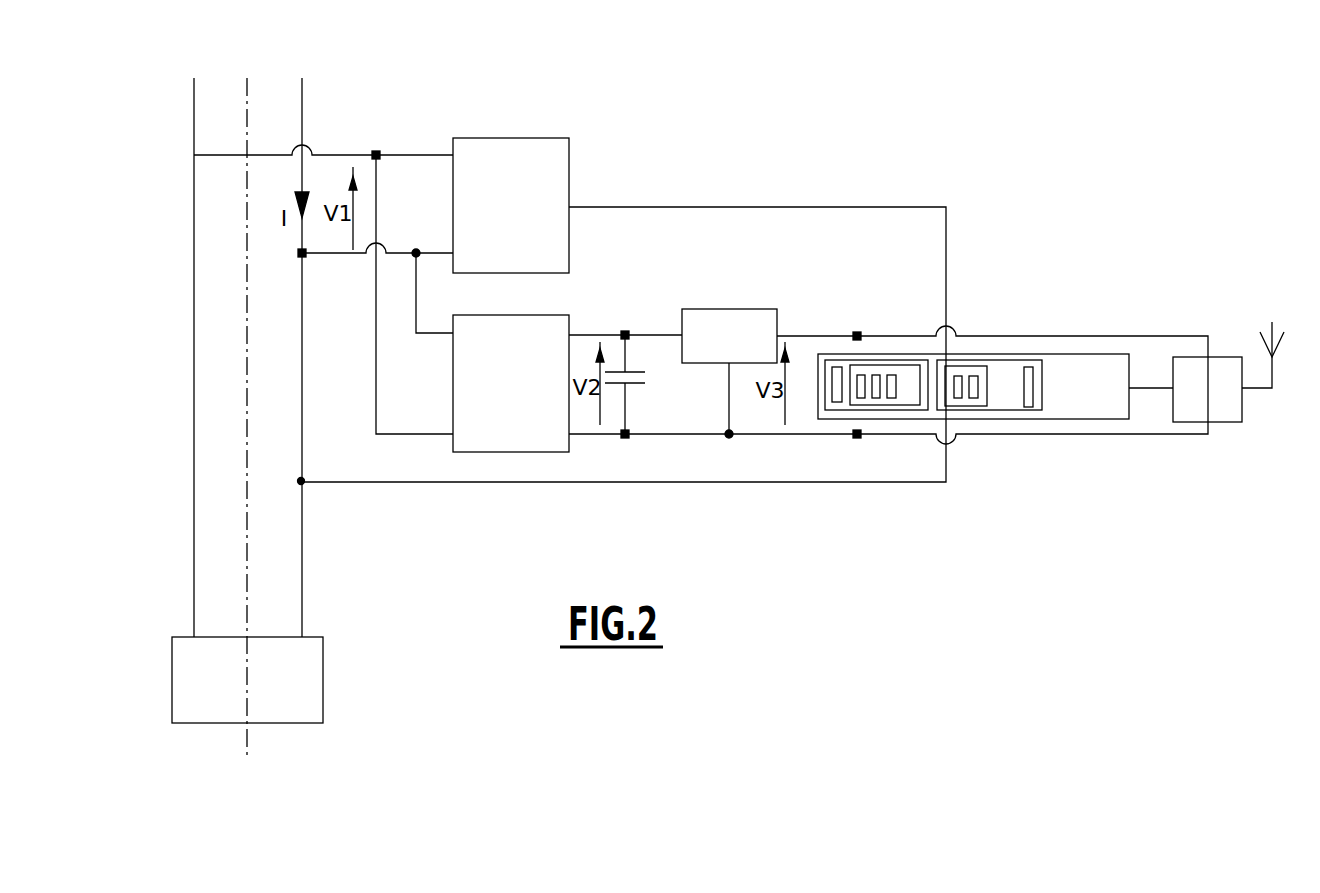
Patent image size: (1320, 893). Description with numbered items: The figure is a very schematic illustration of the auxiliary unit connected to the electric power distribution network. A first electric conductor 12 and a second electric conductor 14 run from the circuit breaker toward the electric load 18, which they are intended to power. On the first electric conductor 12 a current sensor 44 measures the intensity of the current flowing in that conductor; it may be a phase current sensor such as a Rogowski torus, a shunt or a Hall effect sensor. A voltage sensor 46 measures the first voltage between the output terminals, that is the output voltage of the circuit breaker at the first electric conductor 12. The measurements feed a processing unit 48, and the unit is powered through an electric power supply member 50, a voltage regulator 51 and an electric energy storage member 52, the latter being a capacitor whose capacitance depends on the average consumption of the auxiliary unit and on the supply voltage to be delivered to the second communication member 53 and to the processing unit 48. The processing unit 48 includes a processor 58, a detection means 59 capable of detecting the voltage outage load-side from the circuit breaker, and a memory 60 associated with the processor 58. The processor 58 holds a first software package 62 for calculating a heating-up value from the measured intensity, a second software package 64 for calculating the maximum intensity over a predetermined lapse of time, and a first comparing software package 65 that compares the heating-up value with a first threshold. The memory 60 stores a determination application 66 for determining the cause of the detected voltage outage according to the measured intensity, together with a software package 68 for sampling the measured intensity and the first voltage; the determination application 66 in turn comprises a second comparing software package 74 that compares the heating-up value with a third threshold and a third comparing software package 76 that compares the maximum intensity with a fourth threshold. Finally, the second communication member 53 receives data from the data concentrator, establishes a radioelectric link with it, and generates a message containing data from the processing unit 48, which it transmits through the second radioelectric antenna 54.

The second electric conductor 14 is at (194, 121).
The first electric conductor 12 is at (303, 108).
The electric load 18 is at (302, 691).
The current sensor 44 is at (303, 483).
The voltage sensor 46 is at (552, 165).
The processing unit 48 is at (1092, 438).
The electric power supply member 50 is at (548, 322).
The voltage regulator 51 is at (737, 333).
The electric energy storage member 52 is at (625, 335).
The second communication member 53 is at (1223, 363).
The second radioelectric antenna 54 is at (1283, 333).
The processor 58 is at (903, 358).
The detection means 59 is at (837, 392).
The memory 60 is at (1002, 360).
The first software package 62 is at (860, 375).
The second software package 64 is at (874, 398).
The first software package for comparing 65 is at (892, 398).
The determination application 66 is at (967, 370).
The software package for sampling 68 is at (1033, 393).
The second software package for comparing 74 is at (958, 398).
The third software package for comparing 76 is at (975, 390).